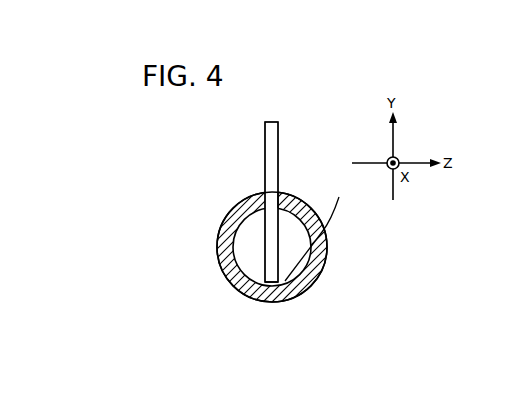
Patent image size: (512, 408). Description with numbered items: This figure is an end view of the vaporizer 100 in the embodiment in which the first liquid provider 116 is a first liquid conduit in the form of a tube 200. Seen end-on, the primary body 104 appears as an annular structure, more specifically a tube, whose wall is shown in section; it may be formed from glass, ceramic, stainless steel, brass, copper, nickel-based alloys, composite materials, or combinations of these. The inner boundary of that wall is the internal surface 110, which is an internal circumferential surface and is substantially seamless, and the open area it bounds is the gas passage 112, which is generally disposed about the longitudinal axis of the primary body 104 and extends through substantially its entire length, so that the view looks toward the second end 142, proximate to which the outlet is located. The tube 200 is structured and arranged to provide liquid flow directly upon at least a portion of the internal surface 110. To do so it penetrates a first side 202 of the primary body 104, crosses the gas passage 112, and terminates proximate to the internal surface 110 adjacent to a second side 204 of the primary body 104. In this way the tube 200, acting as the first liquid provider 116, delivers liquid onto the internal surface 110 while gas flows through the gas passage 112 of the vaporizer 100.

The vaporizer 100 is at (352, 258).
The primary body 104 is at (231, 290).
The internal surface 110 is at (318, 232).
The gas passage 112 is at (265, 259).
The first liquid provider 116 is at (274, 118).
The second end 142 is at (223, 243).
The tube 200 is at (270, 163).
The first side 202 is at (278, 192).
The second side 204 is at (276, 302).